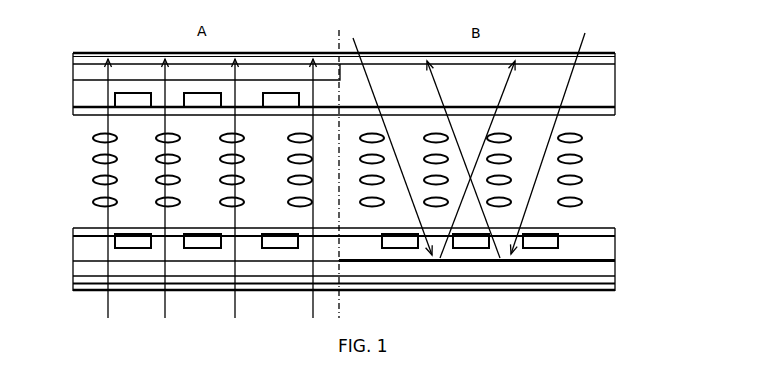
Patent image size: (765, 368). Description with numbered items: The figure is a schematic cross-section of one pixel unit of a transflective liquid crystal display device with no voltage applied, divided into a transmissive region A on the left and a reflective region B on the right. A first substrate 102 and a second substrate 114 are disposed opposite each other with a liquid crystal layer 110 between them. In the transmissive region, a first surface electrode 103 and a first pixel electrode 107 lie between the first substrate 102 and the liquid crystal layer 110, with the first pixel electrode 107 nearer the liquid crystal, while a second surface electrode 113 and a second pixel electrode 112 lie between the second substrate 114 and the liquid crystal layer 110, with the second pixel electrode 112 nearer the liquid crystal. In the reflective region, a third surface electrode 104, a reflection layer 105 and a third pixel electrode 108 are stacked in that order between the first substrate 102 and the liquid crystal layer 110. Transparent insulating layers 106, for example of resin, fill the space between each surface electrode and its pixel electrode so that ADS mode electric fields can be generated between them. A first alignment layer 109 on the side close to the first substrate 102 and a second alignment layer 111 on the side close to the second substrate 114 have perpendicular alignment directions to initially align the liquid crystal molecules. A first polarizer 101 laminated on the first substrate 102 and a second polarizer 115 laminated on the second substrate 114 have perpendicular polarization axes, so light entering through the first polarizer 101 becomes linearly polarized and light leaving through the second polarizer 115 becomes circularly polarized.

The first polarizer 101 is at (615, 289).
The first substrate 102 is at (615, 283).
The first surface electrode 103 is at (73, 270).
The third surface electrode 104 is at (615, 273).
The reflection layer 105 is at (615, 258).
The insulating layers 106 is at (615, 77).
The first pixel electrode 107 is at (115, 240).
The third pixel electrode 108 is at (553, 229).
The first alignment layer 109 is at (615, 228).
The liquid crystal layer 110 is at (610, 163).
The second alignment layer 111 is at (615, 110).
The second pixel electrode 112 is at (115, 100).
The second surface electrode 113 is at (73, 72).
The second substrate 114 is at (615, 63).
The second polarizer 115 is at (615, 53).